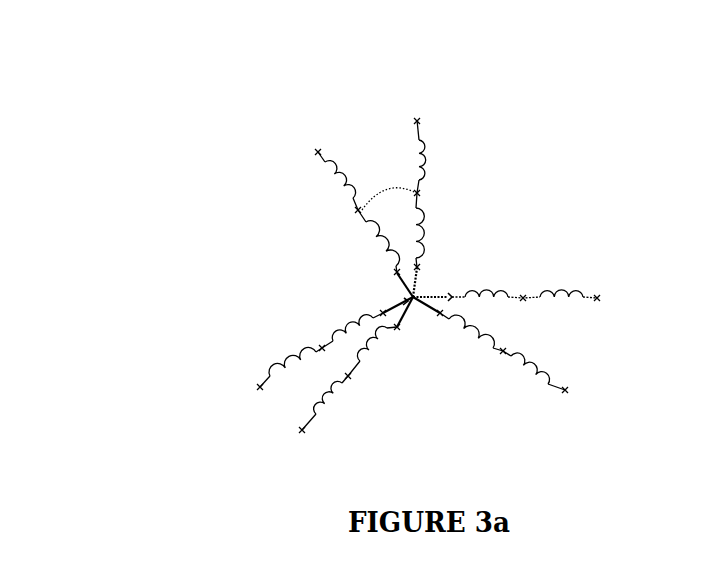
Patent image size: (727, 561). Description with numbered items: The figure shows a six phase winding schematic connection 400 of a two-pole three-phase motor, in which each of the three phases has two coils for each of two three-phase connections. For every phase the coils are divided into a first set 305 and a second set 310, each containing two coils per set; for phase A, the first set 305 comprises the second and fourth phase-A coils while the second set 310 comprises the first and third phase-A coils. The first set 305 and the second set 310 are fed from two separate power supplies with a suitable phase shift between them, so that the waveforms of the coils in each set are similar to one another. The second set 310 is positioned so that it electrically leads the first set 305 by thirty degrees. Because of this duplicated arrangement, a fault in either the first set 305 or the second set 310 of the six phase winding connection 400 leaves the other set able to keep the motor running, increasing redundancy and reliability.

The six phase winding schematic connection 400 is at (163, 191).
The first set 305 is at (347, 178).
The second set 310 is at (429, 208).